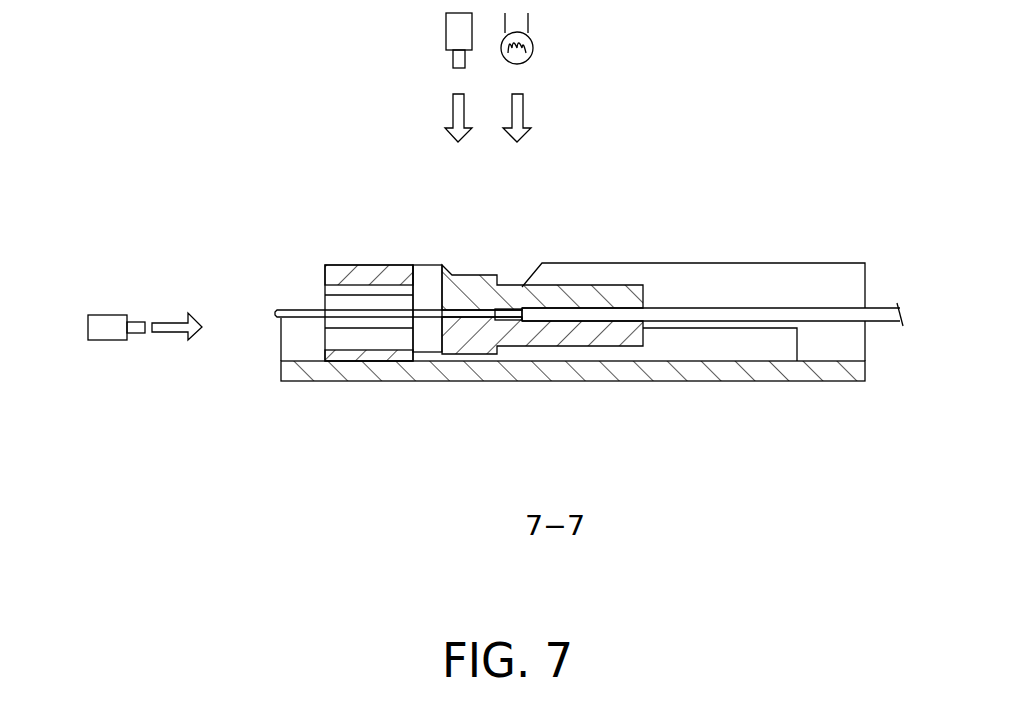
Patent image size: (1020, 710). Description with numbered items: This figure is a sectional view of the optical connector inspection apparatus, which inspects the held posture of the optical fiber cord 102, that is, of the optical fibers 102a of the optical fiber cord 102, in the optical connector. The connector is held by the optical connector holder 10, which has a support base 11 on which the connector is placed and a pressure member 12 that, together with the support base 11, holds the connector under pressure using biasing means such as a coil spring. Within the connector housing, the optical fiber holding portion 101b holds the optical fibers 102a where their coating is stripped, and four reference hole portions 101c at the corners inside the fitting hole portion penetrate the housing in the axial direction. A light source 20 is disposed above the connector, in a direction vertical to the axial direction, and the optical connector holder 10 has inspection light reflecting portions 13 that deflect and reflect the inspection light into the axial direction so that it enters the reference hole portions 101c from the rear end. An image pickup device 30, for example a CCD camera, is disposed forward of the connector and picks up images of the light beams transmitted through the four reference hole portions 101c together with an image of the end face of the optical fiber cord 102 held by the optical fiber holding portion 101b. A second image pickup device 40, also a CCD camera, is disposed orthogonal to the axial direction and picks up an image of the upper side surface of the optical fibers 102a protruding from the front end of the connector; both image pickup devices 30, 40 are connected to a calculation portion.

The optical connector holder 10 is at (574, 331).
The support base 11 is at (590, 373).
The pressure member 12 is at (663, 340).
The inspection light reflecting portion 13 is at (526, 280).
The light source 20 is at (533, 48).
The image pickup device 30 is at (118, 342).
The second image pickup device 40 is at (445, 33).
The optical fiber holding portion 101b is at (472, 322).
The reference hole portion 101c is at (427, 288).
The optical fiber cord 102 is at (755, 312).
The optical fiber 102a is at (301, 310).